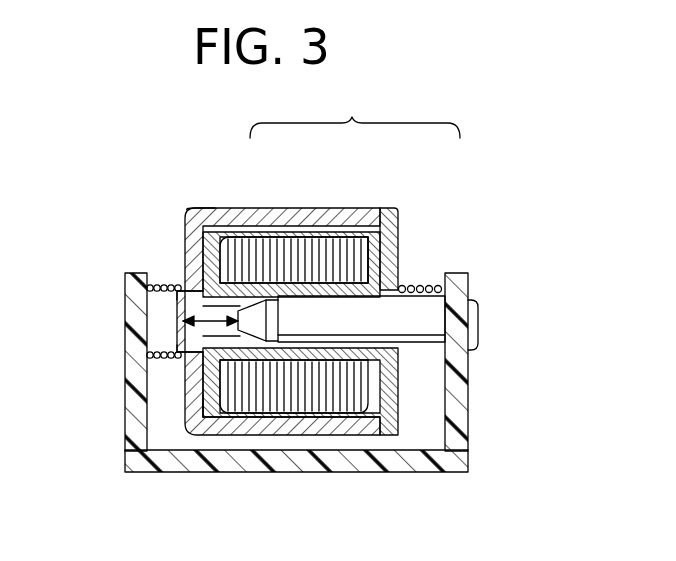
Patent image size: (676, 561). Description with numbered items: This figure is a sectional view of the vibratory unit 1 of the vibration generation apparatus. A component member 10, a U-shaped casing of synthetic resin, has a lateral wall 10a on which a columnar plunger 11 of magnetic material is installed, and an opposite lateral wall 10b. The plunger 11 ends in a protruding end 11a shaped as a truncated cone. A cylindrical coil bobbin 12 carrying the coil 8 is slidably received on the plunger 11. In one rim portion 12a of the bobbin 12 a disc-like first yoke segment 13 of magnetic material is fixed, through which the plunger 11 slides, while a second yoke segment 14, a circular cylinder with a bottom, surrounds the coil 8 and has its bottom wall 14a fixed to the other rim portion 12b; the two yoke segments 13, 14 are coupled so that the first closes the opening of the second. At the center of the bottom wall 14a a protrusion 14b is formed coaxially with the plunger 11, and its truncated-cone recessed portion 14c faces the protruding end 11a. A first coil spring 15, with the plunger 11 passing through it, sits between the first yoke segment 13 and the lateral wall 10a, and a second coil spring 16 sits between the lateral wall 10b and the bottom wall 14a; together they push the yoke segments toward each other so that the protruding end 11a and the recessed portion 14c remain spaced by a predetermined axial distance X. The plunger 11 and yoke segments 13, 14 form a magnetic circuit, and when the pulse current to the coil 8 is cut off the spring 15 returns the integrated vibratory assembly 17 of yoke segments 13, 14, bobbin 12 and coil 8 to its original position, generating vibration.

The motor 1 is at (502, 199).
The coil 8 is at (344, 250).
The component member 10 is at (299, 372).
The lateral wall 10a is at (457, 358).
The lateral wall 10b is at (133, 300).
The columnar plunger 11 is at (386, 389).
The protruding end 11a is at (258, 327).
The coil bobbin 12 is at (271, 291).
The rim portion 12a is at (394, 250).
The rim portion 12b is at (198, 400).
The first yoke segment 13 is at (401, 214).
The second yoke segment 14 is at (222, 285).
The bottom wall 14a is at (188, 211).
The protrusion 14b is at (226, 296).
The recessed portion 14c is at (190, 352).
The first coil spring 15 is at (405, 290).
The second coil spring 16 is at (162, 284).
The vibratory assembly 17 is at (355, 113).
The predetermined distance X is at (183, 318).